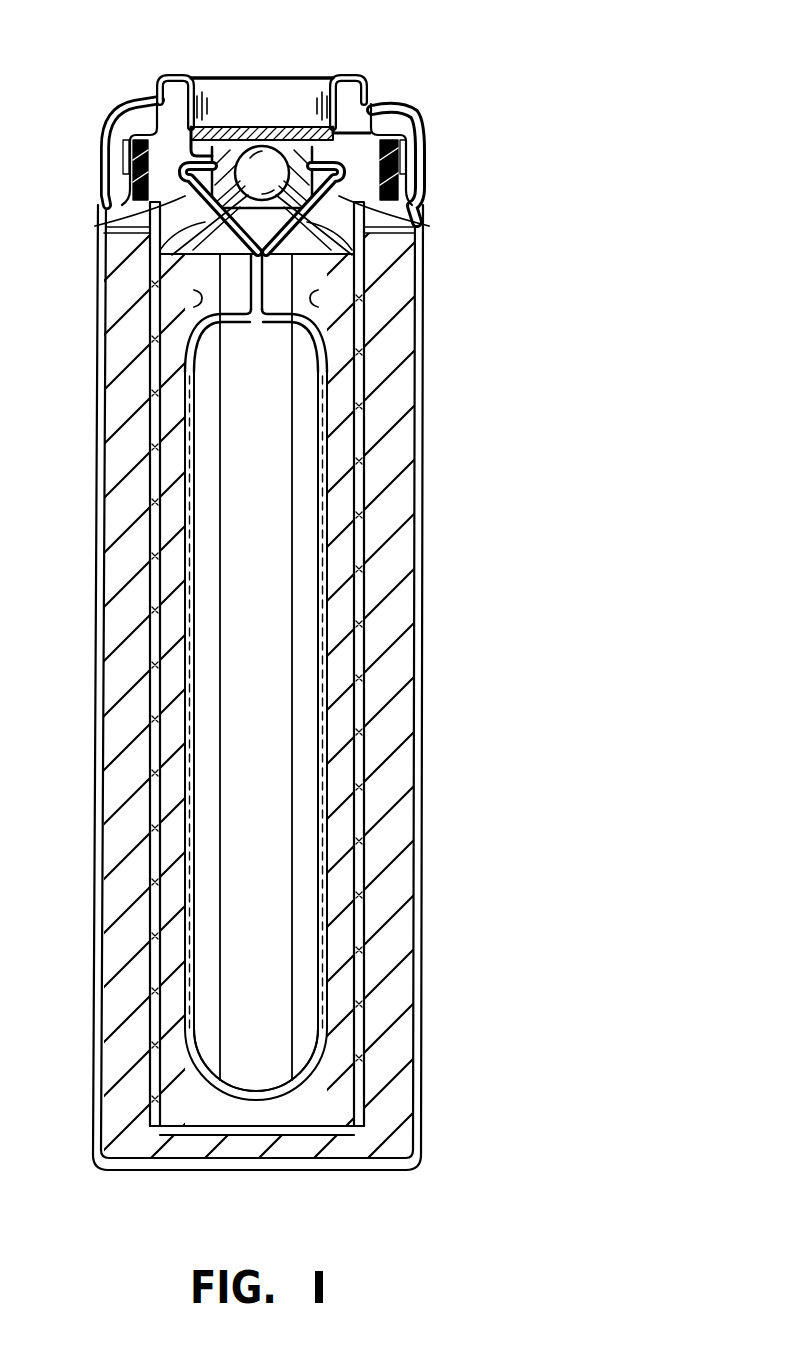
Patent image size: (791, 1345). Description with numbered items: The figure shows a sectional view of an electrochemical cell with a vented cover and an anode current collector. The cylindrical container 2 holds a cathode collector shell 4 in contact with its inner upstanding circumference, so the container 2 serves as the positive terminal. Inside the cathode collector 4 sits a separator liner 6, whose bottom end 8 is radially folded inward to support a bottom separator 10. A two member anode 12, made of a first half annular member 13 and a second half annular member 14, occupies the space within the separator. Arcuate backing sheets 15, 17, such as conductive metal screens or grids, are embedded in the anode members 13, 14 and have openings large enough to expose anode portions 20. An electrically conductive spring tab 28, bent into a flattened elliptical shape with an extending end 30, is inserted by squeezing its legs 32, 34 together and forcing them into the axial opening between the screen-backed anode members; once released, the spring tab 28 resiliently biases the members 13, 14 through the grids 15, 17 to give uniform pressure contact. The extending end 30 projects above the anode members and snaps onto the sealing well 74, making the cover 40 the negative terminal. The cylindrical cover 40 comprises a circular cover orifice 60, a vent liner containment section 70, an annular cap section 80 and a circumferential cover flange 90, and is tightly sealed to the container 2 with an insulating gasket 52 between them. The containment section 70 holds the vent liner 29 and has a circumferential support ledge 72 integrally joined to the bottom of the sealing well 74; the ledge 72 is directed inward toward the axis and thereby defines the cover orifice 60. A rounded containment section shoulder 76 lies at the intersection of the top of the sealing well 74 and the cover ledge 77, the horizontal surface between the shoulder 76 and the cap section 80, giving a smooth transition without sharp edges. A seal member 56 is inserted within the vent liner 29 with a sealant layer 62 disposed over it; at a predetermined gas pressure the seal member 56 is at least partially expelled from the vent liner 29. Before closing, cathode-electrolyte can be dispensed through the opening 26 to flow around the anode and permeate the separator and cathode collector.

The container 2 is at (420, 528).
The cathode collector shell 4 is at (400, 462).
The separator liner 6 is at (362, 680).
The bottom end 8 is at (170, 1140).
The bottom separator 10 is at (310, 1136).
The two member anode 12 is at (178, 582).
The half annular member 13 is at (172, 640).
The half annular member 14 is at (342, 873).
The backing sheet 15 is at (150, 326).
The backing sheet 17 is at (363, 313).
The anode portions 20 is at (322, 780).
The opening 26 is at (272, 428).
The spring tab 28 is at (185, 810).
The vent liner 29 is at (257, 126).
The extending end 30 is at (104, 222).
The leg 32 is at (318, 928).
The leg 34 is at (193, 985).
The cover 40 is at (157, 79).
The insulating gasket 52 is at (372, 100).
The seal member 56 is at (248, 125).
The cover orifice 60 is at (150, 259).
The sealant layer 62 is at (218, 77).
The vent liner containment section 70 is at (411, 200).
The support ledge 72 is at (418, 230).
The sealing well 74 is at (410, 122).
The containment section shoulder 76 is at (276, 126).
The cover ledge 77 is at (287, 126).
The annular cap section 80 is at (333, 97).
The cover flange 90 is at (410, 155).